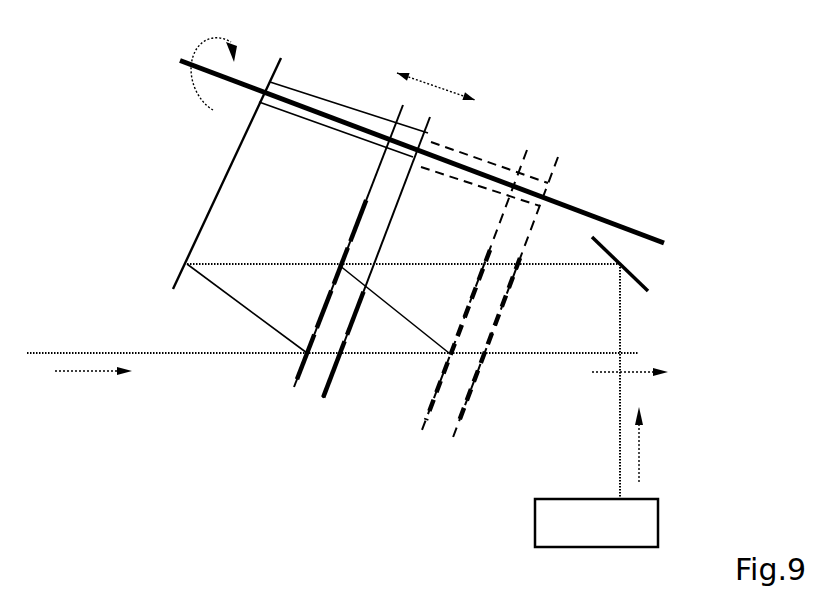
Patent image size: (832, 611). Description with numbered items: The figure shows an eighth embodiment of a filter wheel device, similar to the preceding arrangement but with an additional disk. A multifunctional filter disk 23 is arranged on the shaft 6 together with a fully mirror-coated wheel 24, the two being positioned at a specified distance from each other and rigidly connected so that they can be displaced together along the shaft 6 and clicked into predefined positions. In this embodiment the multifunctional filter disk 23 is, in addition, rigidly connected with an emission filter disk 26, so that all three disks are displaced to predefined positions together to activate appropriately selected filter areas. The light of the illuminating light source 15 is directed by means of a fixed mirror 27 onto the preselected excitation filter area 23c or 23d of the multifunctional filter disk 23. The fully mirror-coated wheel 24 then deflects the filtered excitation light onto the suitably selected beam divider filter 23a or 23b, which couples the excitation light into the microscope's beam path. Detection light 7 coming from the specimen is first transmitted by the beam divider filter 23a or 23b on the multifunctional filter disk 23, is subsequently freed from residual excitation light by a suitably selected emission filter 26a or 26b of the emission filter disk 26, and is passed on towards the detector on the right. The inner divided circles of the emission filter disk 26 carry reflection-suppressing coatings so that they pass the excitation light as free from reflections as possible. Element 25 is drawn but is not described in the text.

The shaft 6 is at (598, 218).
The detection light 7 is at (193, 354).
The illuminating light source 15 is at (596, 523).
The multifunctional filter disk 23 is at (367, 263).
The beam divider filter 23a is at (313, 323).
The beam divider filter 23b is at (340, 312).
The excitation filter area 23c is at (342, 256).
The excitation filter area 23d is at (361, 209).
The fully mirror-coated wheel 24 is at (199, 232).
The light guide 25 is at (329, 103).
The emission filter disk 26 is at (440, 271).
The emission filter 26a is at (340, 354).
The emission filter 26b is at (340, 312).
The fixed mirror 27 is at (642, 293).